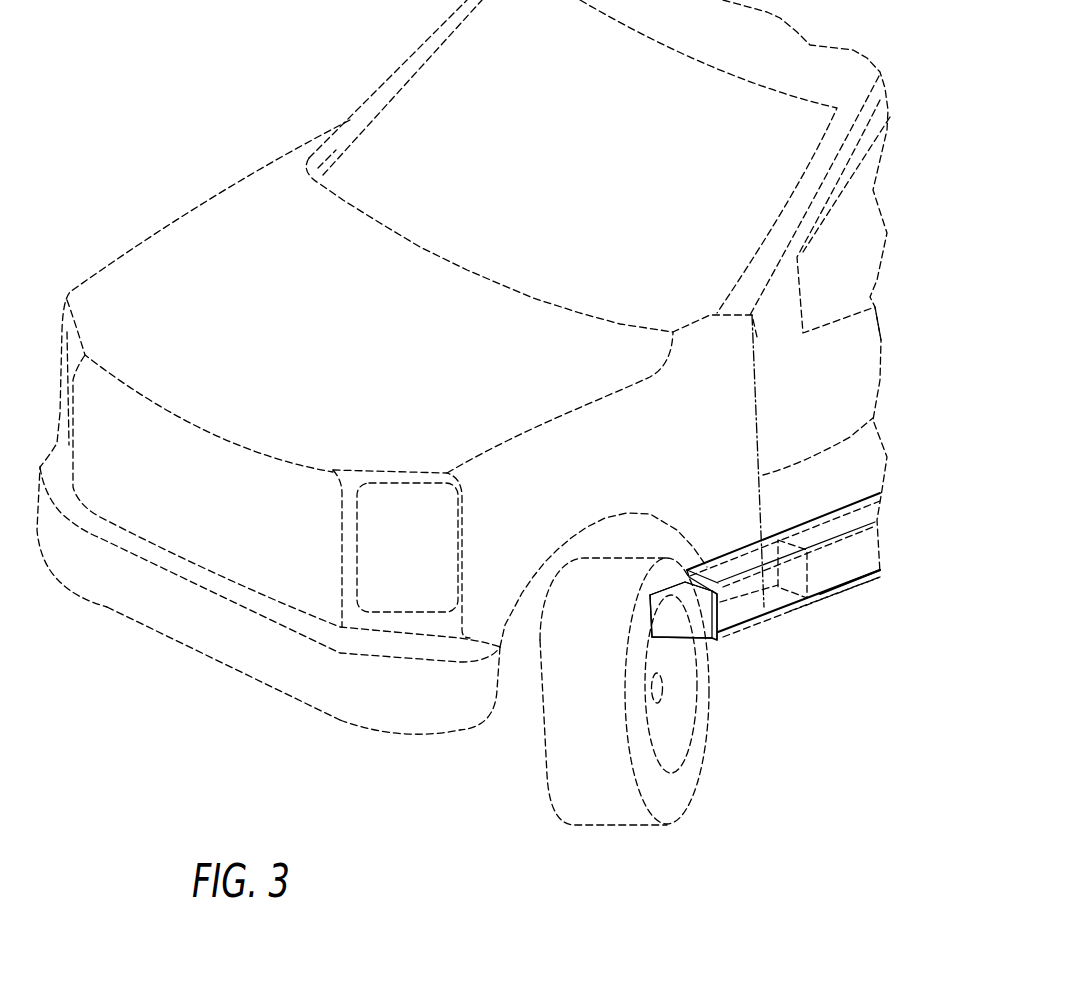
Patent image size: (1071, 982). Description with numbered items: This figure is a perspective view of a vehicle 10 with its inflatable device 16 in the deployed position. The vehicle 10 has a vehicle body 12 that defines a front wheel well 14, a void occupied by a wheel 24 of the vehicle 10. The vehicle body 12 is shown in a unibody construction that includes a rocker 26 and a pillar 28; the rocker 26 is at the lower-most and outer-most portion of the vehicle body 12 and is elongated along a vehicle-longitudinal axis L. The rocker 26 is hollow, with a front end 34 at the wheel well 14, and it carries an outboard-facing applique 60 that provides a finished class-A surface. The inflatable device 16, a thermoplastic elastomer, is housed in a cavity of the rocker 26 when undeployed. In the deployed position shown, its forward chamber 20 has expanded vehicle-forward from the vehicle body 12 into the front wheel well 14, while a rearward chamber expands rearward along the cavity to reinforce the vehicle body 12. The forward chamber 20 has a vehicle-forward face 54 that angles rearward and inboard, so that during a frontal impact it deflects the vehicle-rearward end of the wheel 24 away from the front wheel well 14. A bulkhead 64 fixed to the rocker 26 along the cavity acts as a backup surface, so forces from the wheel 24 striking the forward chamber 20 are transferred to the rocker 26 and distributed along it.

The vehicle 10 is at (246, 78).
The vehicle body 12 is at (840, 604).
The front wheel well 14 is at (516, 712).
The inflatable device 16 is at (686, 646).
The forward chamber 20 is at (670, 637).
The wheel 24 is at (592, 828).
The rocker 26 is at (867, 578).
The pillar 28 is at (873, 418).
The front end of the rocker 34 is at (678, 652).
The vehicle-forward face 54 is at (669, 599).
The applique 60 is at (812, 616).
The bulkhead 64 is at (813, 573).
The vehicle-longitudinal axis L is at (192, 657).